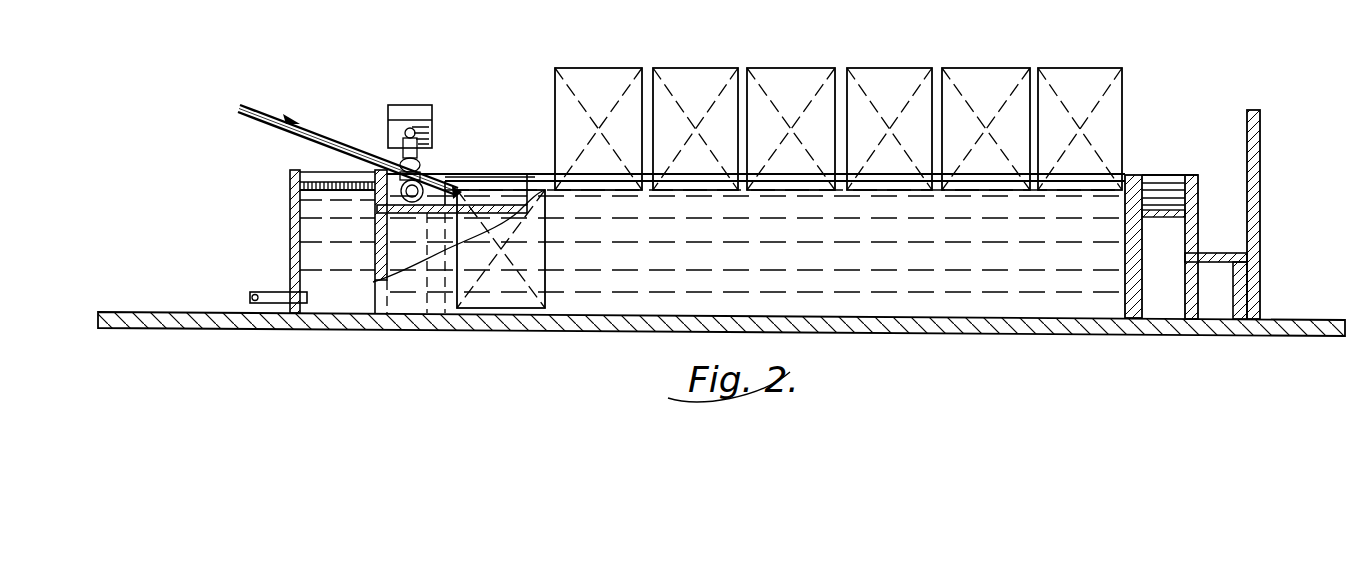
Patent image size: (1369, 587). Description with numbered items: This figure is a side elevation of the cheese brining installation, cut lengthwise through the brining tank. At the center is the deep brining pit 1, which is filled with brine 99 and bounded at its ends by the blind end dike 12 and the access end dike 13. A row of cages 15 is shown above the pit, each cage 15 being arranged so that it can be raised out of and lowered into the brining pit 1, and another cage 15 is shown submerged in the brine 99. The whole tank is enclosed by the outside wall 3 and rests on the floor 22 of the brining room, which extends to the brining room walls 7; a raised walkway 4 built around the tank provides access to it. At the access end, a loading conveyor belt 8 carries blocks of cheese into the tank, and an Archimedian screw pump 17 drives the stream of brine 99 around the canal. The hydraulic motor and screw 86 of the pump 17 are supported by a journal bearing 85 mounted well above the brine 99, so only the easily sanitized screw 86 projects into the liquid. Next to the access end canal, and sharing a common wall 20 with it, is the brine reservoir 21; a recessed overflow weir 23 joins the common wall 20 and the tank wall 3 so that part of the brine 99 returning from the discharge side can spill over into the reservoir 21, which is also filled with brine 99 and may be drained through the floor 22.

The brining pit 1 is at (545, 170).
The outside wall 3 is at (1198, 176).
The raised walkway 4 is at (1219, 253).
The brining room walls 7 is at (1247, 114).
The loading conveyor belt 8 is at (250, 124).
The blind end dike 12 is at (1130, 175).
The access end dike 13 is at (456, 177).
The cage 15 is at (679, 61).
The Archimedian screw pump 17 is at (433, 153).
The common wall 20 is at (372, 298).
The brine reservoir 21 is at (322, 256).
The floor 22 is at (286, 331).
The recessed overflow weir 23 is at (322, 180).
The journal bearing 85 is at (458, 85).
The screw 86 is at (401, 149).
The brine 99 is at (325, 213).